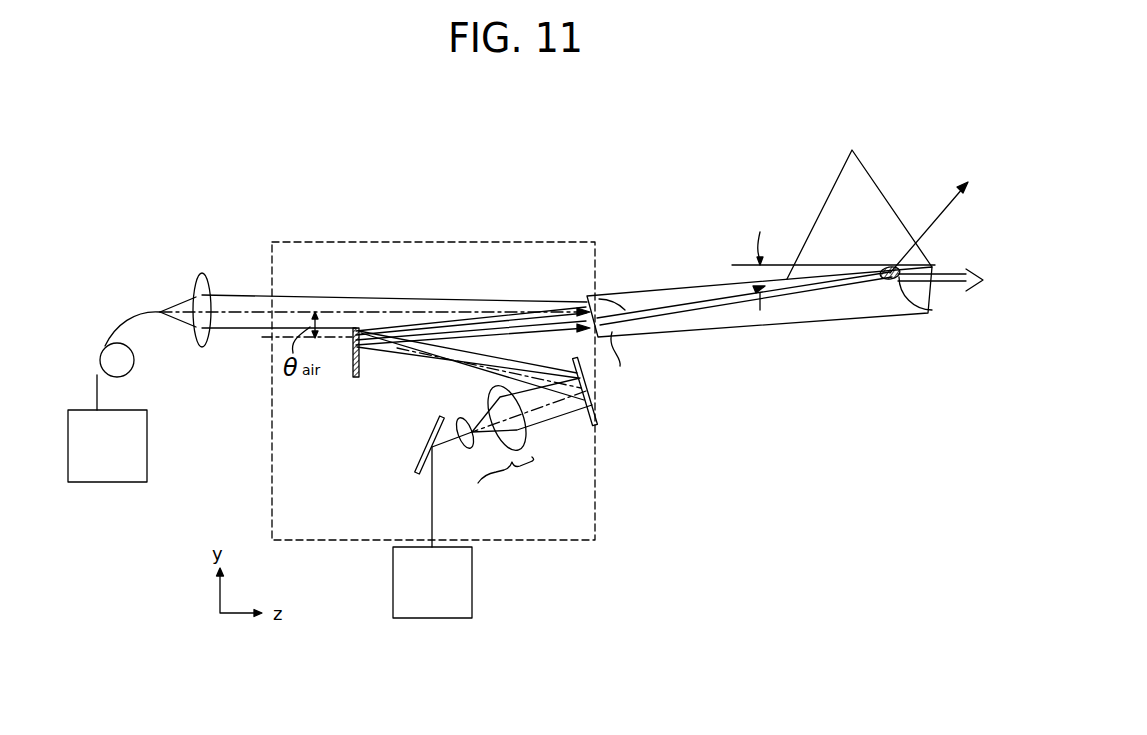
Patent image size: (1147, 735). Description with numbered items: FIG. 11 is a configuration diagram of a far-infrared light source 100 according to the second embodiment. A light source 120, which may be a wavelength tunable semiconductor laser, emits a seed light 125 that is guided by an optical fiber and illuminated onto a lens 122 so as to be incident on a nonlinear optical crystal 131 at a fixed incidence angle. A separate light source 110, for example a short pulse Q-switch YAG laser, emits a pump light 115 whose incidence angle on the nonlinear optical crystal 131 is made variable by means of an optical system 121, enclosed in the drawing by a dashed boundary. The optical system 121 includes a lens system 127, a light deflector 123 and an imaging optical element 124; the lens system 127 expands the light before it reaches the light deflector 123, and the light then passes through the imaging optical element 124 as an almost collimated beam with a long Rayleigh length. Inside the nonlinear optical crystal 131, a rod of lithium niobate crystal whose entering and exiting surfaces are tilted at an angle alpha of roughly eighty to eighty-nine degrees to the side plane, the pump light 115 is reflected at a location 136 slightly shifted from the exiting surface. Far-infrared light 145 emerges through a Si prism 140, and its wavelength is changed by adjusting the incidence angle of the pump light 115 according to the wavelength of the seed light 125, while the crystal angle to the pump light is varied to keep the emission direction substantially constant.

The far-infrared light source 100 is at (687, 152).
The light source 110 is at (472, 582).
The pump light 115 is at (395, 352).
The light source 120 is at (110, 483).
The optical system 121 is at (438, 242).
The lens 122 is at (203, 347).
The light deflector 123 is at (596, 397).
The imaging optical element 124 is at (353, 362).
The seed light 125 is at (230, 294).
The lens system 127 is at (522, 444).
The nonlinear optical crystal 131 is at (641, 294).
The location 136 is at (895, 258).
The Si prism 140 is at (826, 195).
The far-infrared light 145 is at (935, 208).